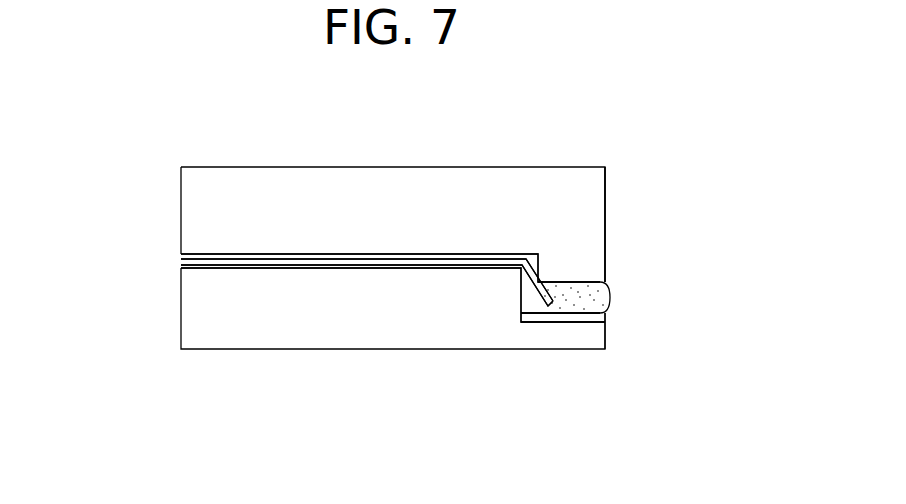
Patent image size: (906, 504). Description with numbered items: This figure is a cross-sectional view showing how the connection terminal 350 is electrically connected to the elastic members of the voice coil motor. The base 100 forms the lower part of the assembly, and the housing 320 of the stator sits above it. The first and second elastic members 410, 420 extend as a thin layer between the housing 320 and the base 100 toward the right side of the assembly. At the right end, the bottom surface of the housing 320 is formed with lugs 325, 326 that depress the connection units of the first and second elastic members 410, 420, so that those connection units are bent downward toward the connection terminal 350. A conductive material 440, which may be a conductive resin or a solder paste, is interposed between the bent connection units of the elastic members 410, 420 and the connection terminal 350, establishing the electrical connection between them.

The base 100 is at (293, 325).
The housing 320 is at (618, 214).
The lug 325 is at (605, 265).
The lug 326 is at (605, 265).
The connection terminal 350 is at (606, 318).
The first elastic member 410 is at (178, 258).
The second elastic member 420 is at (178, 258).
The conductive material 440 is at (606, 294).